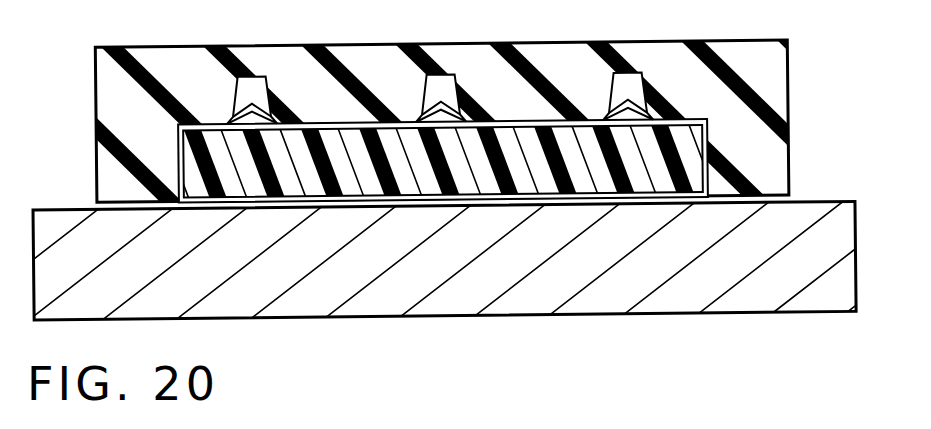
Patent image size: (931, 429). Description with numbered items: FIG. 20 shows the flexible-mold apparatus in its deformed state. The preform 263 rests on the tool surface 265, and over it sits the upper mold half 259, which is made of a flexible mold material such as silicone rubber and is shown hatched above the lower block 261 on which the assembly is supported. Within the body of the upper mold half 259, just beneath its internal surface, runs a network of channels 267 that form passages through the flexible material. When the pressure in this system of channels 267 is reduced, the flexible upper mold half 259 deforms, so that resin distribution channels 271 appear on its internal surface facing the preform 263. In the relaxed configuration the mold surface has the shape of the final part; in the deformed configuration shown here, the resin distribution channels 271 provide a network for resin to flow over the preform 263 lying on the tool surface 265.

The upper mold half 259 is at (120, 172).
The substrate 261 is at (179, 282).
The preform 263 is at (422, 191).
The tool surface 265 is at (593, 204).
The channels 267 is at (248, 94).
The resin distribution channels 271 is at (617, 116).